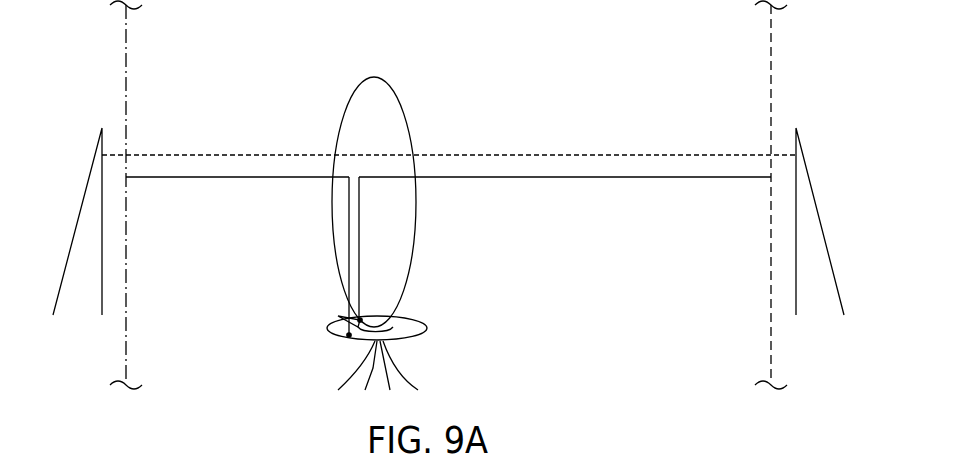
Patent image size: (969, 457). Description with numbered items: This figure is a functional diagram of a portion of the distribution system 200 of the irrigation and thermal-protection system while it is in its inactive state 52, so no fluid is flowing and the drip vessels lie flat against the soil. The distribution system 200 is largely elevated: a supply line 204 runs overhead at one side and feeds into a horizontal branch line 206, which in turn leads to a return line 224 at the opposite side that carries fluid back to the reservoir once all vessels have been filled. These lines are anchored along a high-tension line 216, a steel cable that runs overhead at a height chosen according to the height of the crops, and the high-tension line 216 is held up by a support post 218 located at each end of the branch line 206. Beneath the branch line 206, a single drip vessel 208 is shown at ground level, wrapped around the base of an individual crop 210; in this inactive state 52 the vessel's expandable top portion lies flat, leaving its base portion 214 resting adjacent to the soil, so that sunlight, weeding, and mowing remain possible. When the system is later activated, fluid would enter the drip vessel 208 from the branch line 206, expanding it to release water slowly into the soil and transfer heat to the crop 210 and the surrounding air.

The distribution system 200 is at (115, 77).
The supply line 204 is at (126, 285).
The branch line 206 is at (185, 178).
The drip vessel 208 is at (410, 320).
The crop 210 is at (380, 92).
The base portion 214 is at (415, 344).
The high-tension line 216 is at (195, 154).
The support post 218 is at (818, 218).
The return line 224 is at (771, 327).
The inactive state 52 is at (305, 345).